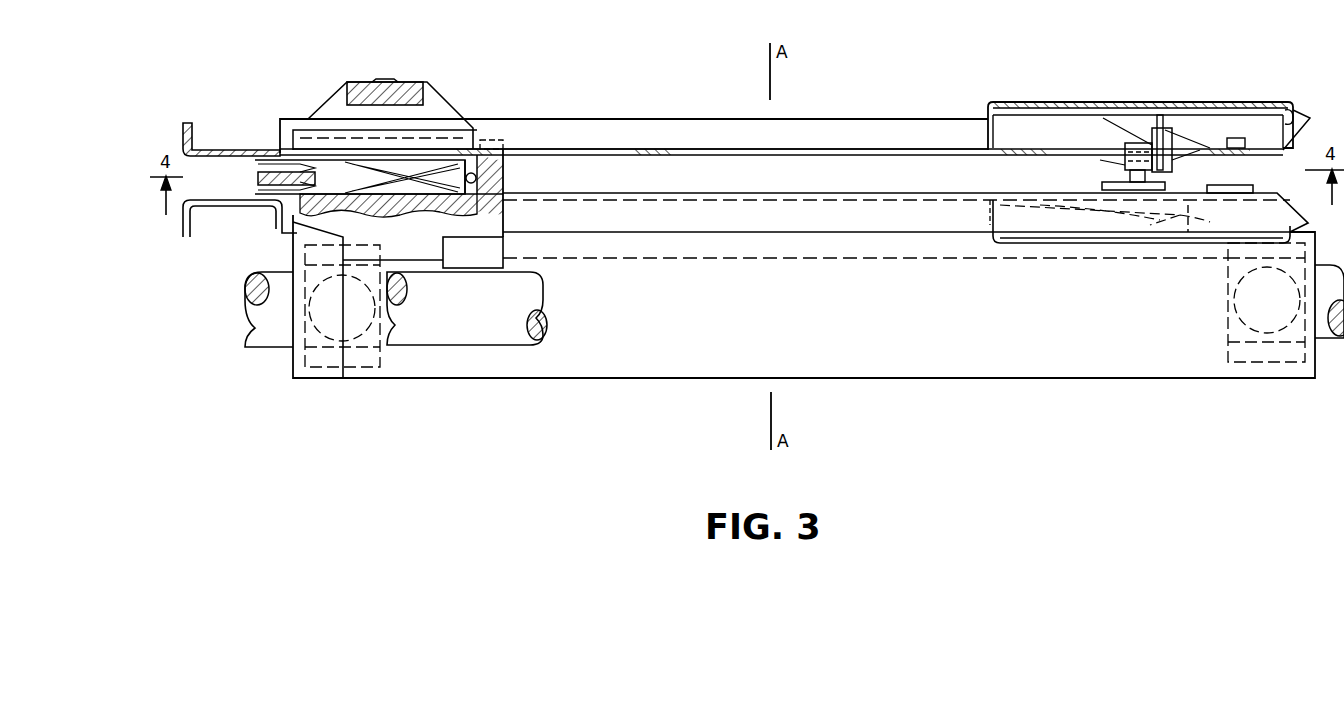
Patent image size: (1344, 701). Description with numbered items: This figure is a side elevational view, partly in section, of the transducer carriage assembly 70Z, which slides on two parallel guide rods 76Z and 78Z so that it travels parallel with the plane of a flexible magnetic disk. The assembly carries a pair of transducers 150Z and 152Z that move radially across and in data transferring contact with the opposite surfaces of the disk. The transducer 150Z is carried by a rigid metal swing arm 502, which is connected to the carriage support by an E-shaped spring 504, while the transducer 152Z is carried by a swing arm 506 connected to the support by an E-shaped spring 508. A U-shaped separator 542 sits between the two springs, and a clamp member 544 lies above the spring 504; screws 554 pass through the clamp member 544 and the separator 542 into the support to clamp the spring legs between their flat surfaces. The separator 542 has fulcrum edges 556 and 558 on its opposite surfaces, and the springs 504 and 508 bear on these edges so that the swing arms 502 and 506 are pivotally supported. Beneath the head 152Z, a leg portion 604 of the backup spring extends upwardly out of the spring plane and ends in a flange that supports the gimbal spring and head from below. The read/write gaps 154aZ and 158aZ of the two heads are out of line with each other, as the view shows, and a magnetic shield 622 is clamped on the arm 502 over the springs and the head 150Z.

The transducer carriage assembly 70Z is at (632, 385).
The guide rod 76Z is at (271, 352).
The guide rod 78Z is at (478, 318).
The swing arm 502 is at (911, 116).
The E-shaped spring 504 is at (415, 172).
The swing arm 506 is at (928, 236).
The E-shaped spring 508 is at (410, 190).
The separator 542 is at (370, 189).
The clamp member 544 is at (413, 82).
The screw 554 is at (383, 80).
The fulcrum edge 556 is at (258, 167).
The fulcrum edge 558 is at (258, 198).
The magnetic shield 622 is at (1020, 100).
The transducer 150Z is at (1125, 168).
The transducer 152Z is at (1183, 188).
The read/write gap 154aZ is at (1178, 178).
The read/write gap 158aZ is at (1140, 180).
The leg portion 604 is at (1188, 232).